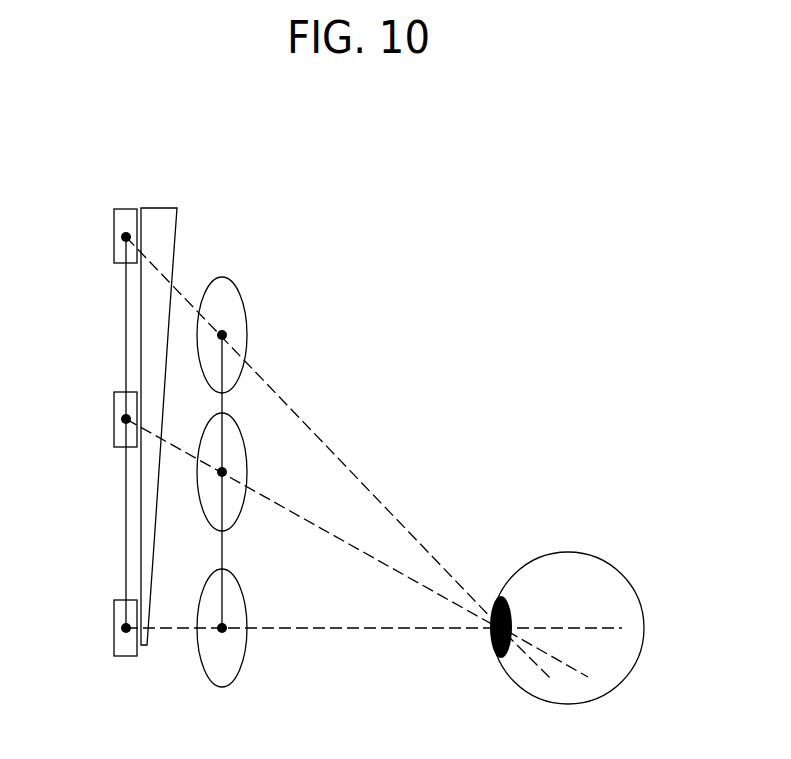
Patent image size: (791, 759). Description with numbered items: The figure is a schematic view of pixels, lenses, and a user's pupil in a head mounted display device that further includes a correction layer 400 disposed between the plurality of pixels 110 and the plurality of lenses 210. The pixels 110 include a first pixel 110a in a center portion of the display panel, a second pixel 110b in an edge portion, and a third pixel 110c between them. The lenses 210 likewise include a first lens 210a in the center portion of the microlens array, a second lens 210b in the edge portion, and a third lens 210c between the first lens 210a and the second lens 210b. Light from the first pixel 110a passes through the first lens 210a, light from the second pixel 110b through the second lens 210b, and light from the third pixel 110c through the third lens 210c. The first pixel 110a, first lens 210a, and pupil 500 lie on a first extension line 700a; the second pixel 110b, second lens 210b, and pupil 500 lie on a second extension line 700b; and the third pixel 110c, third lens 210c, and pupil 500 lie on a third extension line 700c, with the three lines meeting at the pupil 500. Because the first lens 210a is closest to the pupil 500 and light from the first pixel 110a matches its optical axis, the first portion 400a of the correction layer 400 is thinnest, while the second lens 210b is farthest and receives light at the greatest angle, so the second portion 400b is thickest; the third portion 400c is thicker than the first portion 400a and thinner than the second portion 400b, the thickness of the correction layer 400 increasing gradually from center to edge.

The plurality of pixels 110 is at (319, 432).
The first pixel 110a is at (114, 628).
The second pixel 110b is at (114, 237).
The third pixel 110c is at (114, 419).
The plurality of lenses 210 is at (393, 500).
The first lens 210a is at (230, 685).
The second lens 210b is at (245, 310).
The third lens 210c is at (233, 525).
The correction layer 400 is at (189, 404).
The first portion of correction layer 400a is at (145, 622).
The second portion of correction layer 400b is at (162, 227).
The third portion of correction layer 400c is at (152, 423).
The pupil 500 is at (497, 600).
The first extension line 700a is at (330, 629).
The second extension line 700b is at (327, 440).
The third extension line 700c is at (300, 512).